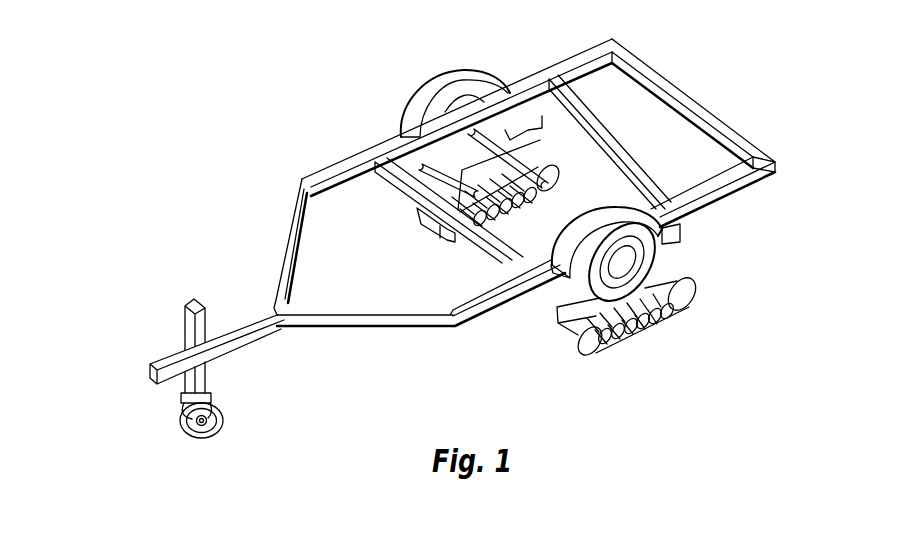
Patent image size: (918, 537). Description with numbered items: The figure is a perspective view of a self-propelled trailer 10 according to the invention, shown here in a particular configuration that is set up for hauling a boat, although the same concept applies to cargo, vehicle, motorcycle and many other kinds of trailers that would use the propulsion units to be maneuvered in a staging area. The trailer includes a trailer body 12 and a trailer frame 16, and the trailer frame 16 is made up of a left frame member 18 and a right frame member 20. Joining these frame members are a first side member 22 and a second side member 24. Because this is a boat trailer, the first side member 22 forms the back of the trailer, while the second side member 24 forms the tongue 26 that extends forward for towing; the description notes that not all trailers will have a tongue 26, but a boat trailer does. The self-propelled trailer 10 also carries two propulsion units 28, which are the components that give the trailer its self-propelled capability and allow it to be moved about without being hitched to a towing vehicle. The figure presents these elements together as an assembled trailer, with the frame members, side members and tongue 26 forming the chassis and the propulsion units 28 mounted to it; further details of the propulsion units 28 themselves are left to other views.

The self-propelled trailer 10 is at (248, 101).
The trailer body 12 is at (282, 270).
The trailer frame 16 is at (587, 50).
The left frame member 18 is at (442, 322).
The right frame member 20 is at (338, 183).
The first side member 22 is at (683, 96).
The second side member 24 is at (224, 345).
The tongue 26 is at (168, 350).
The propulsion unit 28 is at (587, 357).